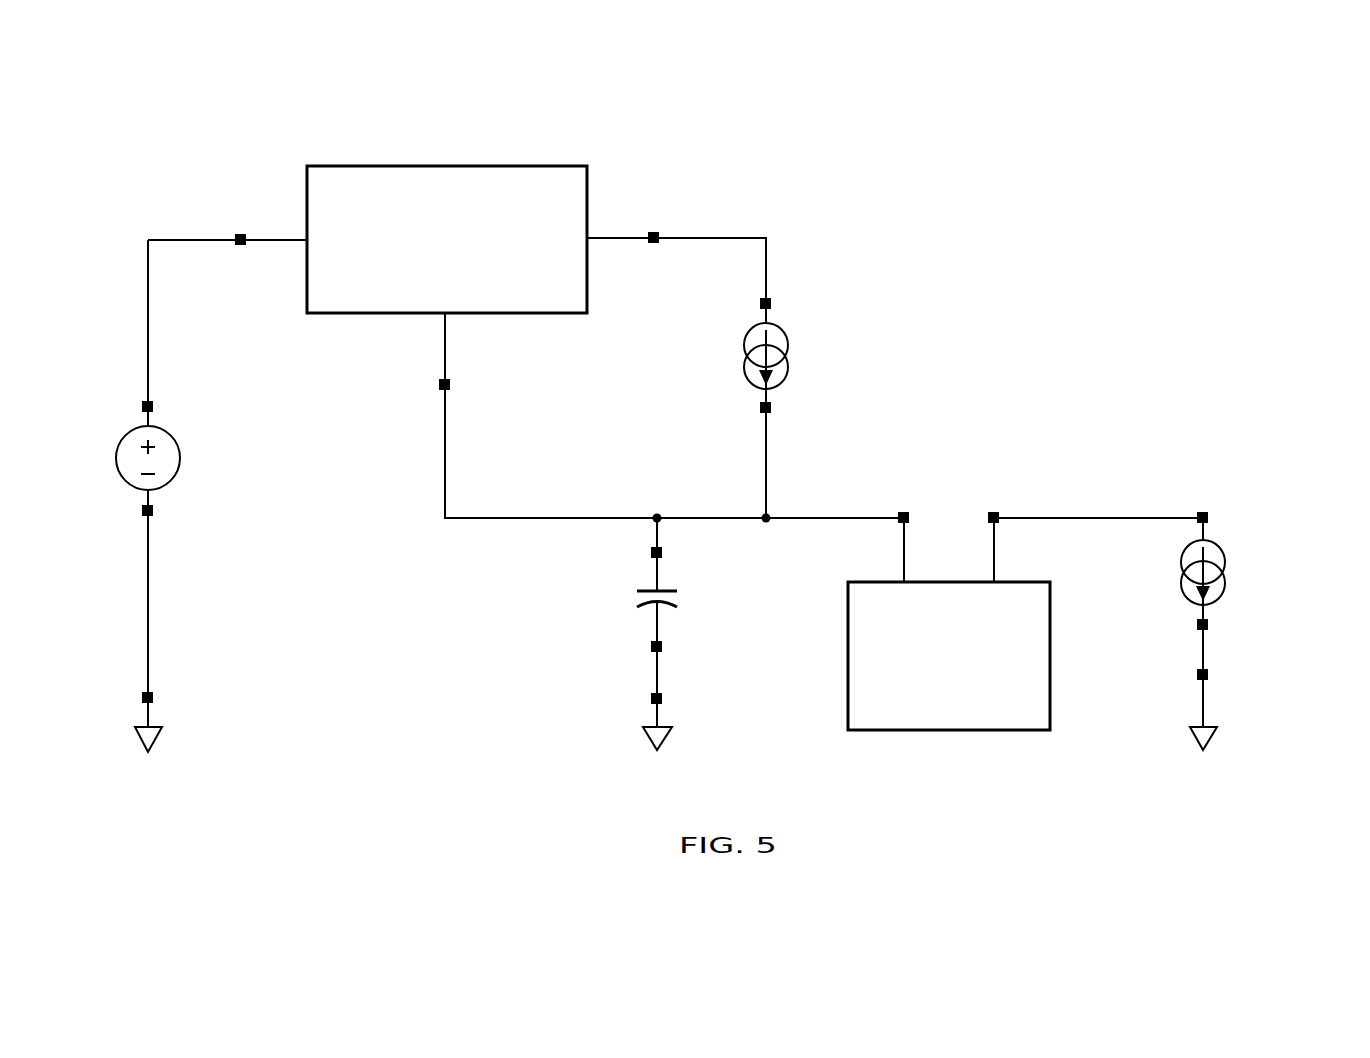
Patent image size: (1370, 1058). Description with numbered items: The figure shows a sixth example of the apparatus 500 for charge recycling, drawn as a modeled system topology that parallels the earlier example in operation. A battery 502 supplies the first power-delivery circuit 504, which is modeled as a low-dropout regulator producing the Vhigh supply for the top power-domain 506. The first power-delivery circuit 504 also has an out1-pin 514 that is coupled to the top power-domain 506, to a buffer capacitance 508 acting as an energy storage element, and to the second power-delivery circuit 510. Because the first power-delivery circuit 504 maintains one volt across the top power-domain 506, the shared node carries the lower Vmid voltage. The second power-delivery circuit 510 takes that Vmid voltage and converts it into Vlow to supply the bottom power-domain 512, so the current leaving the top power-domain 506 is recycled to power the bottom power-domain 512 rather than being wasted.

The apparatus for charge recycling 500 is at (166, 138).
The battery 502 is at (180, 450).
The first power-delivery circuit 504 is at (446, 165).
The top power-domain 506 is at (805, 338).
The buffer capacitance 508 is at (705, 617).
The second power-delivery circuit 510 is at (1008, 733).
The bottom power-domain 512 is at (1272, 560).
The out1-pin 514 is at (398, 395).